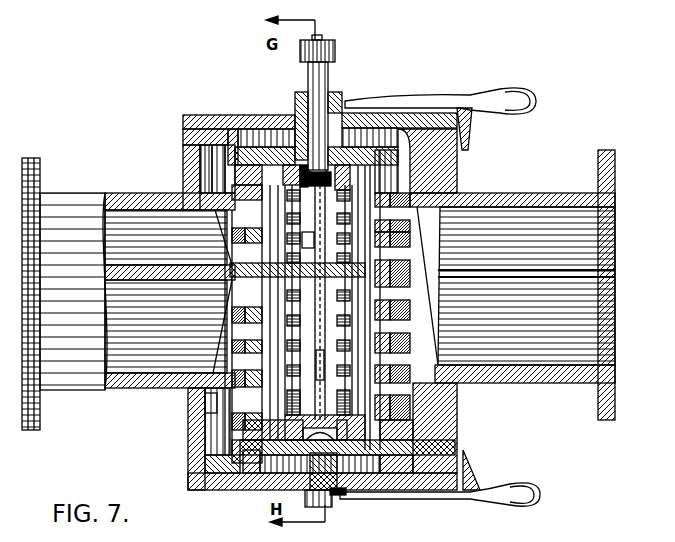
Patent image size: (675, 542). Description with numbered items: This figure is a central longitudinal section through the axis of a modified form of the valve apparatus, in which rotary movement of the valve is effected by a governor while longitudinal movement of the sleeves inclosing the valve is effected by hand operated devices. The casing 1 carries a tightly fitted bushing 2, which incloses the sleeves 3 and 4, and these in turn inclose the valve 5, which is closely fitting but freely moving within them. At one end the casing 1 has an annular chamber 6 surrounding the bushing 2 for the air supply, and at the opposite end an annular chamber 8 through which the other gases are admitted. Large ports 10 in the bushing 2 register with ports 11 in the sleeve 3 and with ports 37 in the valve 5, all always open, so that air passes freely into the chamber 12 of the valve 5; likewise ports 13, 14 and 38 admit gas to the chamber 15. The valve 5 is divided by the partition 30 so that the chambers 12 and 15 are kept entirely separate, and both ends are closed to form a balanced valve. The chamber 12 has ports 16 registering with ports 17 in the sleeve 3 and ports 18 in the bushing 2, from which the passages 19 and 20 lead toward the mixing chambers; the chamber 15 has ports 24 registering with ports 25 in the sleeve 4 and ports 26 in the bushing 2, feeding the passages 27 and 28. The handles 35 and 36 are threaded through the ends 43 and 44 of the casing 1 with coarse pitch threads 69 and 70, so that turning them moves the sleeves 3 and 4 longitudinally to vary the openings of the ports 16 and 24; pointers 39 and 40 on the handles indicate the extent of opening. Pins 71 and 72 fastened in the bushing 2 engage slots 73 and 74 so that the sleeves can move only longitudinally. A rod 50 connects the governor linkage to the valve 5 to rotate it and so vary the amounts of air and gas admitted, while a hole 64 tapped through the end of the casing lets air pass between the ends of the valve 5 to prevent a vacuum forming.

The casing 1 is at (190, 428).
The bushing 2 is at (237, 492).
The sleeve 3 is at (377, 478).
The sleeve 4 is at (350, 147).
The valve 5 is at (270, 478).
The annular chamber 6 is at (216, 405).
The annular chamber 8 is at (233, 176).
The ports 10 is at (235, 415).
The ports 11 is at (262, 420).
The chamber 12 is at (325, 428).
The ports 13 is at (206, 146).
The ports 14 is at (258, 183).
The chamber 15 is at (297, 262).
The ports 16 is at (405, 372).
The ports 17 is at (393, 365).
The ports 18 is at (385, 358).
The passage 19 is at (166, 326).
The passage 20 is at (525, 320).
The ports 24 is at (458, 165).
The ports 25 is at (405, 200).
The ports 26 is at (405, 222).
The passage 27 is at (124, 294).
The passage 28 is at (526, 285).
The partition 30 is at (232, 281).
The handle 35 is at (533, 508).
The handle 36 is at (522, 90).
The ports 37 is at (205, 480).
The ports 38 is at (240, 130).
The pointer 39 is at (478, 480).
The pointer 40 is at (470, 120).
The end 43 is at (212, 492).
The end 44 is at (238, 115).
The rod 50 is at (329, 78).
The hole 64 is at (332, 42).
The coarse pitch thread 69 is at (318, 502).
The coarse pitch thread 70 is at (322, 118).
The pin 71 is at (320, 355).
The pin 72 is at (328, 232).
The slot 73 is at (323, 350).
The slot 74 is at (318, 240).